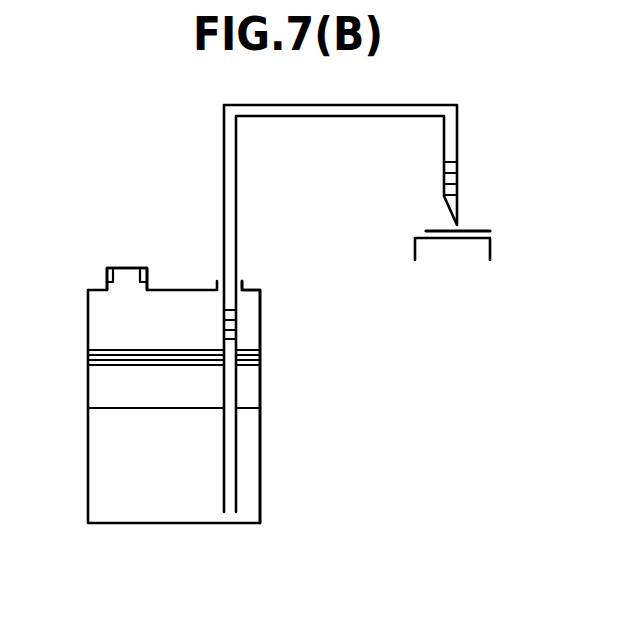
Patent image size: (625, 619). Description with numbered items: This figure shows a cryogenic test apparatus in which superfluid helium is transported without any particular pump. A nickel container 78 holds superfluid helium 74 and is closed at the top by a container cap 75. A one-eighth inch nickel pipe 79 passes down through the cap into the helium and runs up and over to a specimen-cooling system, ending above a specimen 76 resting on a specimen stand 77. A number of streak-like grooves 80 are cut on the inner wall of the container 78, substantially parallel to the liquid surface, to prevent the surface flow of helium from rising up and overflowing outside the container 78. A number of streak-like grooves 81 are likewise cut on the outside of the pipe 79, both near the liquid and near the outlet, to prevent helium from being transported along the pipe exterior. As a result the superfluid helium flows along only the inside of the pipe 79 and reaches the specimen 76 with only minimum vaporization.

The superfluid helium 74 is at (158, 510).
The container cap 75 is at (125, 268).
The specimen 76 is at (482, 231).
The specimen stand 77 is at (491, 250).
The container 78 is at (259, 335).
The pipe 79 is at (236, 193).
The streak-like grooves 80 is at (85, 343).
The streak-like grooves 81 is at (462, 160).